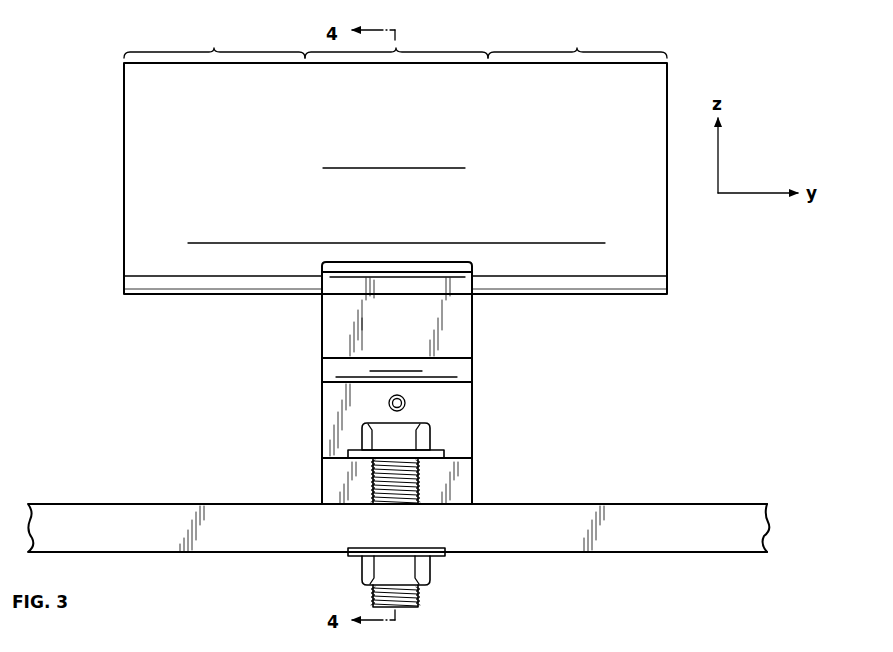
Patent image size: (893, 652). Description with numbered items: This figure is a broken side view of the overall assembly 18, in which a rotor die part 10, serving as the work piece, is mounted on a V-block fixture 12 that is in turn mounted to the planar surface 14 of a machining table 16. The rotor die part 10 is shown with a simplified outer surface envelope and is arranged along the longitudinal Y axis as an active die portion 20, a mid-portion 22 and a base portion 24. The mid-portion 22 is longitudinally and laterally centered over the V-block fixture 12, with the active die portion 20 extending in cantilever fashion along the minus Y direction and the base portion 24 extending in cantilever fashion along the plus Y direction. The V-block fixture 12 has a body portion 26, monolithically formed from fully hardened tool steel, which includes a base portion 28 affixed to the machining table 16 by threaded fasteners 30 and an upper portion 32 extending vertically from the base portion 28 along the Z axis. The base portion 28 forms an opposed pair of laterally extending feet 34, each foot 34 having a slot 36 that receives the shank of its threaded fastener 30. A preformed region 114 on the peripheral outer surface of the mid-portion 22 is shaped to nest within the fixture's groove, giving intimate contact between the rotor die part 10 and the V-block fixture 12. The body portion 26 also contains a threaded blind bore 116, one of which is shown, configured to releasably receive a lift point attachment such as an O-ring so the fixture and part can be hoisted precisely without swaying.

The rotor die part 10 is at (121, 153).
The V-block fixture 12 is at (319, 372).
The planar surface 14 is at (733, 504).
The machining table 16 is at (743, 534).
The overall assembly 18 is at (704, 77).
The active die portion 20 is at (214, 42).
The mid-portion 22 is at (396, 42).
The base portion 24 is at (577, 41).
The body portion 26 is at (476, 374).
The base portion 28 is at (452, 438).
The threaded fasteners 30 is at (395, 436).
The upper portion 32 is at (423, 288).
The feet 34 is at (458, 486).
The slot 36 is at (388, 488).
The preformed region 114 is at (396, 262).
The threaded blind bores 116 is at (408, 410).